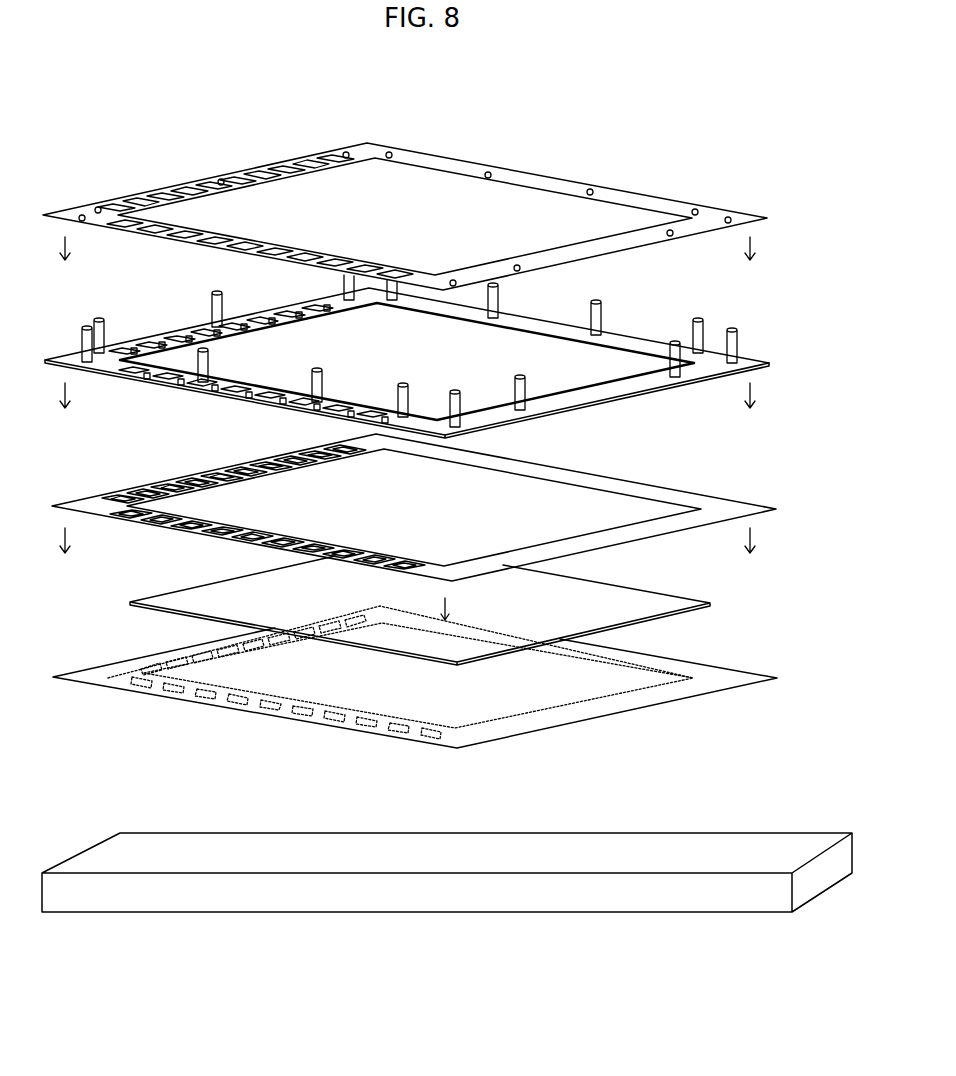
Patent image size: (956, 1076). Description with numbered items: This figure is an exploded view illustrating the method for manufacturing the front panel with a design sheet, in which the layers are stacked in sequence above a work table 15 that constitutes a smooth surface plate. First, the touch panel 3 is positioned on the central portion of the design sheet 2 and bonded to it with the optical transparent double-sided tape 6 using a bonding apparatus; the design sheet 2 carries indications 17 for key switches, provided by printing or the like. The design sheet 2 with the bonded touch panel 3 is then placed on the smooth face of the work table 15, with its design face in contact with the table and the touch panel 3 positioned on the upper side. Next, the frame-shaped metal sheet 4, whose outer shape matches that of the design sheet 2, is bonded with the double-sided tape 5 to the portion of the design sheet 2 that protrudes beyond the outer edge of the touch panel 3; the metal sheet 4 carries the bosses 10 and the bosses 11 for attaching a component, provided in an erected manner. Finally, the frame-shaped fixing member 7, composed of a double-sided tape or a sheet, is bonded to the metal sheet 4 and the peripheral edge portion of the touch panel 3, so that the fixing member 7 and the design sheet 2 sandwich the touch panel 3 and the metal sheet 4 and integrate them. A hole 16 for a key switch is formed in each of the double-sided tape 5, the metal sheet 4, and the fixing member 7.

The design sheet 2 is at (415, 689).
The touch panel 3 is at (167, 589).
The metal sheet 4 is at (150, 342).
The double-sided tape 5 is at (127, 487).
The optical transparent double-sided tape 6 is at (418, 664).
The fixing member 7 is at (185, 183).
The bosses 10 is at (527, 386).
The bosses for attaching a component 11 is at (243, 378).
The work table 15 is at (687, 833).
The hole 16 is at (293, 243).
The indication 17 is at (260, 713).